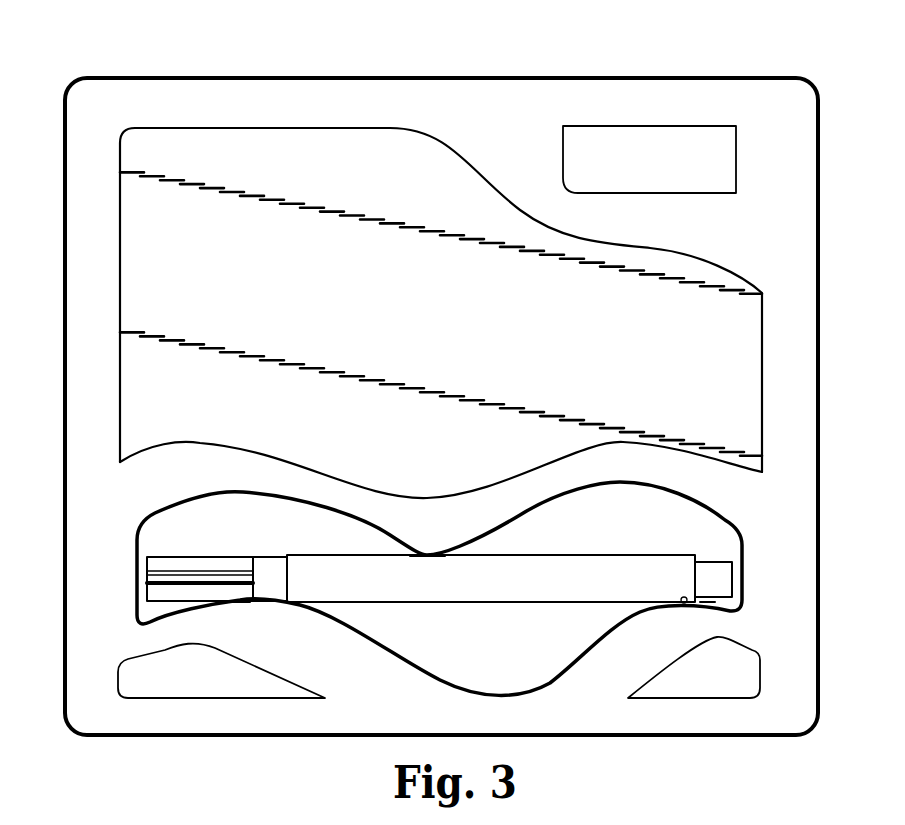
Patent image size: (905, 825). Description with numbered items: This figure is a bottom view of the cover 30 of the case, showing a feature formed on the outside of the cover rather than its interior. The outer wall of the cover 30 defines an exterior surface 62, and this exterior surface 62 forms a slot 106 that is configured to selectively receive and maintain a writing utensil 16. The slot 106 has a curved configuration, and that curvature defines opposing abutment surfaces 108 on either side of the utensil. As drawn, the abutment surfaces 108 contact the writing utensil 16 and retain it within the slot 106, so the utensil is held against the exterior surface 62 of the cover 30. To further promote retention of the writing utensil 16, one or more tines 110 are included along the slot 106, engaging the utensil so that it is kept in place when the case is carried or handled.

The cover 30 is at (50, 88).
The exterior surface 62 is at (788, 335).
The slot 106 is at (690, 527).
The writing utensil 16 is at (512, 607).
The tines 110 is at (238, 600).
The abutment surfaces 108 is at (425, 556).